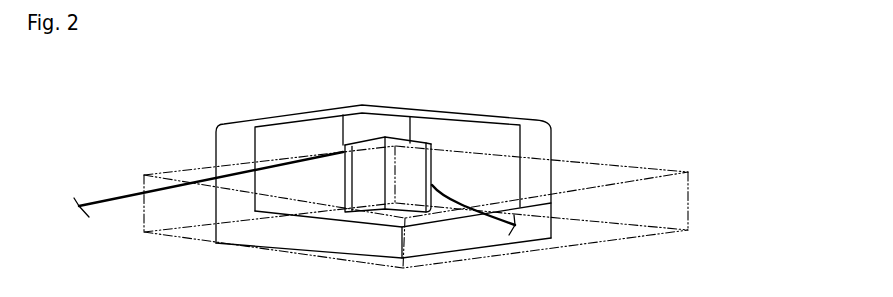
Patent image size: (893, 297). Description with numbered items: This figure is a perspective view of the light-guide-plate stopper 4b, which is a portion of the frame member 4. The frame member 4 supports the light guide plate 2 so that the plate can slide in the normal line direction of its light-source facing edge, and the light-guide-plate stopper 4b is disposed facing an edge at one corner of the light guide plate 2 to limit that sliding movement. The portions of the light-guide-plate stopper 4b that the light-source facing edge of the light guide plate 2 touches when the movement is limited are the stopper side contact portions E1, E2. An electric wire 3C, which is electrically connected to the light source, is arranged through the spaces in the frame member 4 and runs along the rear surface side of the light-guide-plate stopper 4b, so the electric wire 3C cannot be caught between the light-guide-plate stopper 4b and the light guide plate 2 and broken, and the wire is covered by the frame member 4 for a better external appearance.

The light guide plate 2 is at (648, 162).
The frame member 4 is at (493, 113).
The light-guide-plate stopper 4b is at (426, 146).
The stopper side contact portion E1 is at (374, 170).
The stopper side contact portion E2 is at (389, 170).
The electric wire 3C is at (113, 197).